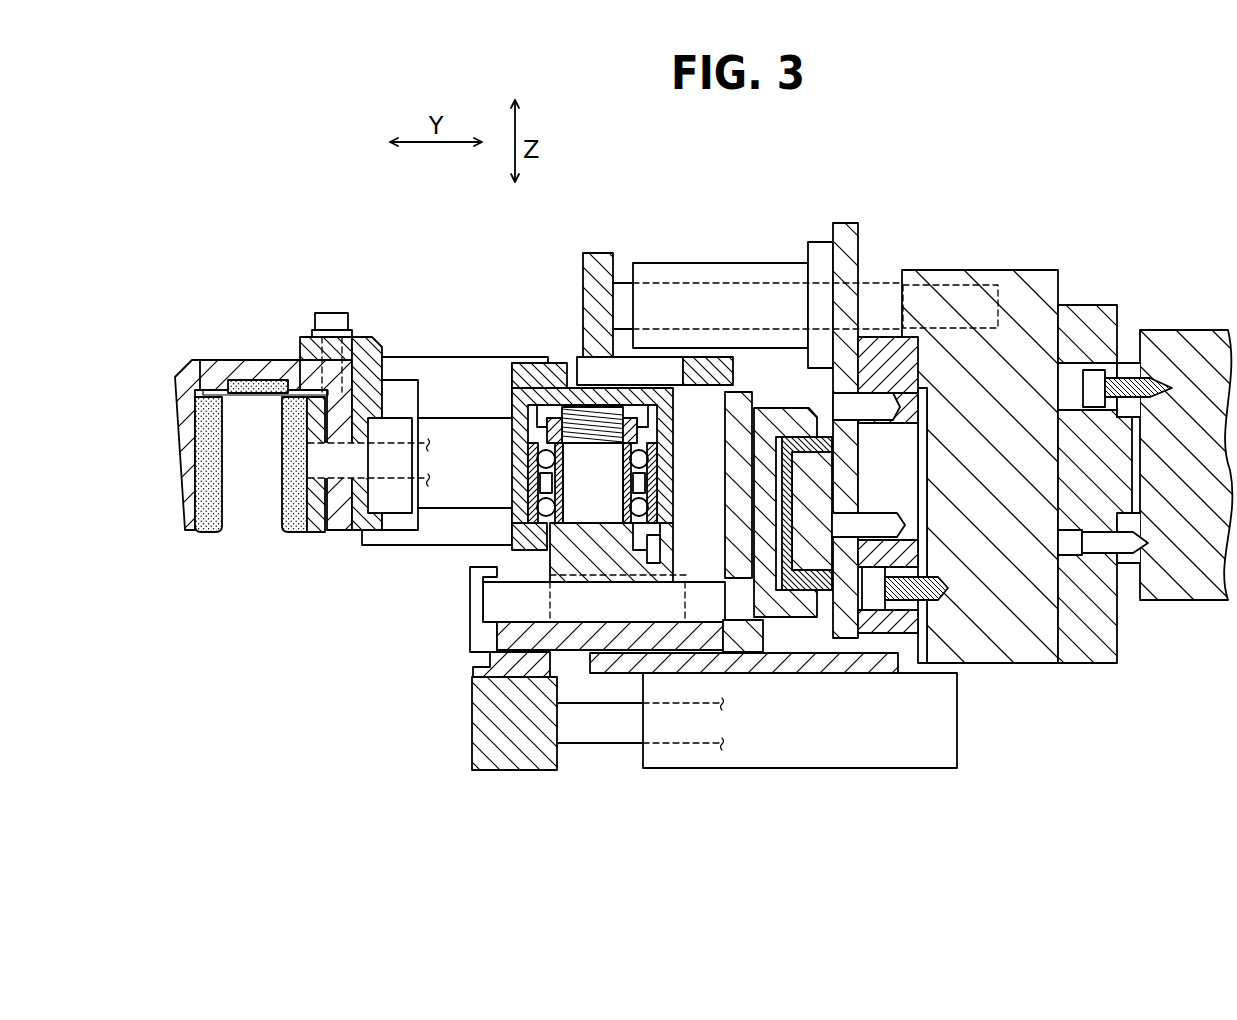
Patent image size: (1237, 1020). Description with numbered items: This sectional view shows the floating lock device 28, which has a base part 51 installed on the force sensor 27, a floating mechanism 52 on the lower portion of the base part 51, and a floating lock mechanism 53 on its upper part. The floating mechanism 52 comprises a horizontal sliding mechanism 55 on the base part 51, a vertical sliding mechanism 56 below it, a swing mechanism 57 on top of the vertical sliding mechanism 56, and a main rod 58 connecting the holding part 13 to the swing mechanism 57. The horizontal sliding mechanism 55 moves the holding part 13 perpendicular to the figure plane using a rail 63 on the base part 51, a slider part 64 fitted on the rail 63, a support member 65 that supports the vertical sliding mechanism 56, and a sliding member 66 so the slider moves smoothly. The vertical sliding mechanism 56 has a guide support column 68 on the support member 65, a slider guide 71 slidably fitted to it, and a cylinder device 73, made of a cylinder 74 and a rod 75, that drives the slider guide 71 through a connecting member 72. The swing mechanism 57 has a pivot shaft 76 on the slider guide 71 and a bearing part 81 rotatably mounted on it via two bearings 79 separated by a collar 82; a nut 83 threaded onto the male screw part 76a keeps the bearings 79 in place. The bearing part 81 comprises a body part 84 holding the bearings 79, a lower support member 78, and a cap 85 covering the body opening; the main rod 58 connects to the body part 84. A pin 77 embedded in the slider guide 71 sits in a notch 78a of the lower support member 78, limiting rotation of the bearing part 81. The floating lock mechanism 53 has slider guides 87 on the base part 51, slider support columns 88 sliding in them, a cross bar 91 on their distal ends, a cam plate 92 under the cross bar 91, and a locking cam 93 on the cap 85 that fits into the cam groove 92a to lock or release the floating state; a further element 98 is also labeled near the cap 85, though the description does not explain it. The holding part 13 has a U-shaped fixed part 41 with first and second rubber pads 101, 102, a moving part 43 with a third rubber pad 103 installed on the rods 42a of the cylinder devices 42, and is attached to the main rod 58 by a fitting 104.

The holding part 13 is at (256, 353).
The force sensor 27 is at (1165, 340).
The floating lock device 28 is at (746, 251).
The fixed part 41 is at (184, 357).
The cylinder device 42 is at (399, 343).
The rod 42a is at (342, 466).
The moving part 43 is at (303, 547).
The base part 51 is at (1041, 259).
The floating mechanism 52 is at (461, 639).
The floating lock mechanism 53 is at (684, 251).
The horizontal sliding mechanism 55 is at (798, 382).
The vertical sliding mechanism 56 is at (681, 783).
The swing mechanism 57 is at (472, 358).
The main rod 58 is at (443, 490).
The rail 63 is at (822, 563).
The slider part 64 is at (793, 630).
The support member 65 is at (746, 656).
The sliding member 66 is at (807, 583).
The guide support column 68 is at (470, 632).
The slider guide 71 is at (578, 652).
The connecting member 72 is at (474, 667).
The cylinder device 73 is at (939, 782).
The cylinder 74 is at (938, 718).
The rod 75 is at (598, 735).
The pivot shaft 76 is at (590, 512).
The male screw part 76a is at (566, 345).
The pin 77 is at (665, 540).
The lower support member 78 is at (525, 515).
The notch 78a is at (640, 566).
The bearing 79 is at (523, 463).
The bearing part 81 is at (427, 358).
The collar 82 is at (660, 492).
The nut 83 is at (556, 362).
The body part 84 is at (670, 445).
The cap 85 is at (500, 360).
The slider guide 87 is at (767, 273).
The slider support column 88 is at (885, 283).
The cross bar 91 is at (606, 262).
The cam plate 92 is at (652, 358).
The cam groove 92a is at (670, 376).
The locking cam 93 is at (545, 360).
The gap 98 is at (577, 335).
The first rubber pad 101 is at (205, 522).
The second rubber pad 102 is at (258, 396).
The third rubber pad 103 is at (283, 502).
The fitting 104 is at (299, 342).